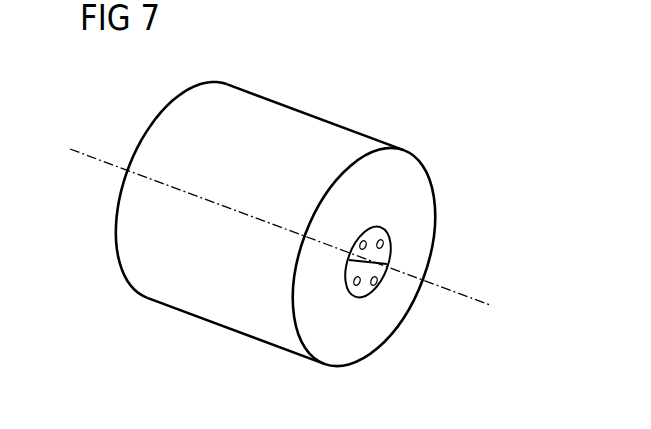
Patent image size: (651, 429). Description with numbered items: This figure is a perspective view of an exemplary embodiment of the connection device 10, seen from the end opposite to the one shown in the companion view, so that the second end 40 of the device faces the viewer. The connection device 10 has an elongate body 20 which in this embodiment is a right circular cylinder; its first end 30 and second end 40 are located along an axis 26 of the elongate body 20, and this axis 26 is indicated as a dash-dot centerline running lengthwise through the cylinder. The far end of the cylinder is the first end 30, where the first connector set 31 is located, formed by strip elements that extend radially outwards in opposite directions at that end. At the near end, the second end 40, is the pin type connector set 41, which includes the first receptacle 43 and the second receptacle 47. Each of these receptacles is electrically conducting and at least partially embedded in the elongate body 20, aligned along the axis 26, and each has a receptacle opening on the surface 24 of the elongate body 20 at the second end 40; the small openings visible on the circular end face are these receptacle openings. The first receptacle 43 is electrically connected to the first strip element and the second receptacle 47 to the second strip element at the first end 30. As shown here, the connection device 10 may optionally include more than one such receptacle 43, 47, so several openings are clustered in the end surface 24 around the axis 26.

The connection device 10 is at (302, 227).
The elongate body 20 is at (260, 115).
The surface 24 is at (393, 163).
The axis 26 is at (466, 300).
The first end 30 is at (128, 273).
The first connector set 31 is at (120, 186).
The second end 40 is at (338, 345).
The pin type connector set 41 is at (376, 228).
The first receptacle 43 is at (390, 245).
The second receptacle 47 is at (359, 288).